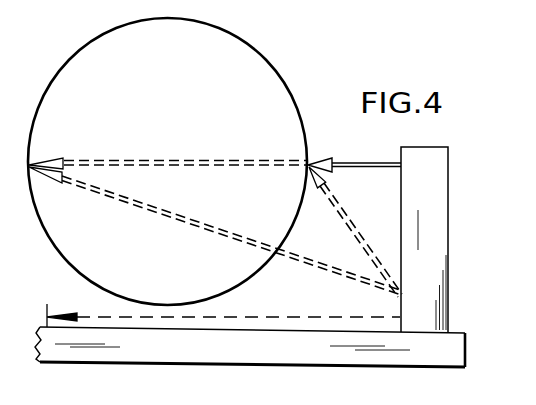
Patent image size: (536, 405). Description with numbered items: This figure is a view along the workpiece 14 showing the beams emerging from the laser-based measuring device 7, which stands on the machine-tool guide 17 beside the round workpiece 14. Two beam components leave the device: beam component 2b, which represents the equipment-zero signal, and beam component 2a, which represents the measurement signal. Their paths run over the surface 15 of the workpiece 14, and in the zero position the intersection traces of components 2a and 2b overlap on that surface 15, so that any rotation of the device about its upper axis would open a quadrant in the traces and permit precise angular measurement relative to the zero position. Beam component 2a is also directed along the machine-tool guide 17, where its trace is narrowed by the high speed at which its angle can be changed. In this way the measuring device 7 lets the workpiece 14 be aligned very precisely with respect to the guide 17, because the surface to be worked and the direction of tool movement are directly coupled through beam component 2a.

The workpiece 14 is at (266, 80).
The surface of the workpiece 15 is at (198, 134).
The beam component 2a is at (365, 245).
The beam component 2b is at (356, 163).
The laser-based measuring device 7 is at (438, 279).
The machine-tool guide 17 is at (315, 358).